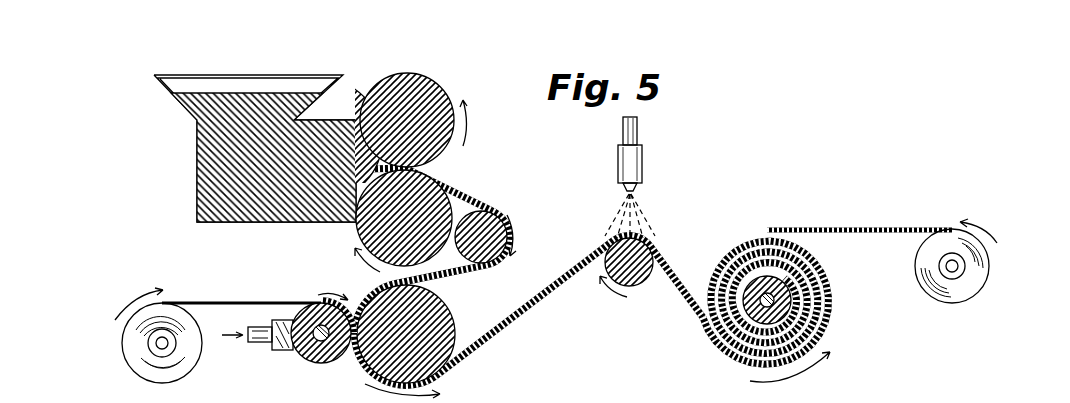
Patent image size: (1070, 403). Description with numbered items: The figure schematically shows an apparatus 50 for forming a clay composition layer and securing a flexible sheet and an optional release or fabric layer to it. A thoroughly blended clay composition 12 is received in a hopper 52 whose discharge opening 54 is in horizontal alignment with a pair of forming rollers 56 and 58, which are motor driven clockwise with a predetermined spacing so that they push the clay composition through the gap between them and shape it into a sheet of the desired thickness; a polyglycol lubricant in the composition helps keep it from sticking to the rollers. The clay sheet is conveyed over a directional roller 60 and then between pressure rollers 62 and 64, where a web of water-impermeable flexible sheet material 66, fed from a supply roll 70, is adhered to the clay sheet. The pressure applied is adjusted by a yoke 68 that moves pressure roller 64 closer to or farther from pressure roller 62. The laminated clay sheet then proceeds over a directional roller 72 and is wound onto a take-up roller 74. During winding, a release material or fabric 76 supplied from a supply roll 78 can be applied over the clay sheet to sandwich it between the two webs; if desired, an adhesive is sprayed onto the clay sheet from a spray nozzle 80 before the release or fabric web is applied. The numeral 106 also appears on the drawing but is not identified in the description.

The clay composition 12 is at (210, 192).
The apparatus 50 is at (756, 143).
The hopper 52 is at (197, 151).
The discharge opening 54 is at (360, 117).
The forming roller 56 is at (430, 92).
The forming roller 58 is at (362, 228).
The directional roller 60 is at (488, 216).
The pressure roller 62 is at (452, 312).
The pressure roller 64 is at (338, 360).
The water-impermeable flexible sheet material 66 is at (222, 303).
The yoke 68 is at (280, 352).
The supply roll 70 is at (136, 361).
The directional roller 72 is at (642, 284).
The take-up roller 74 is at (818, 262).
The release material or fabric 76 is at (835, 229).
The supply roll 78 is at (990, 280).
The spray nozzle 80 is at (622, 159).
The laminate 106 is at (985, 385).